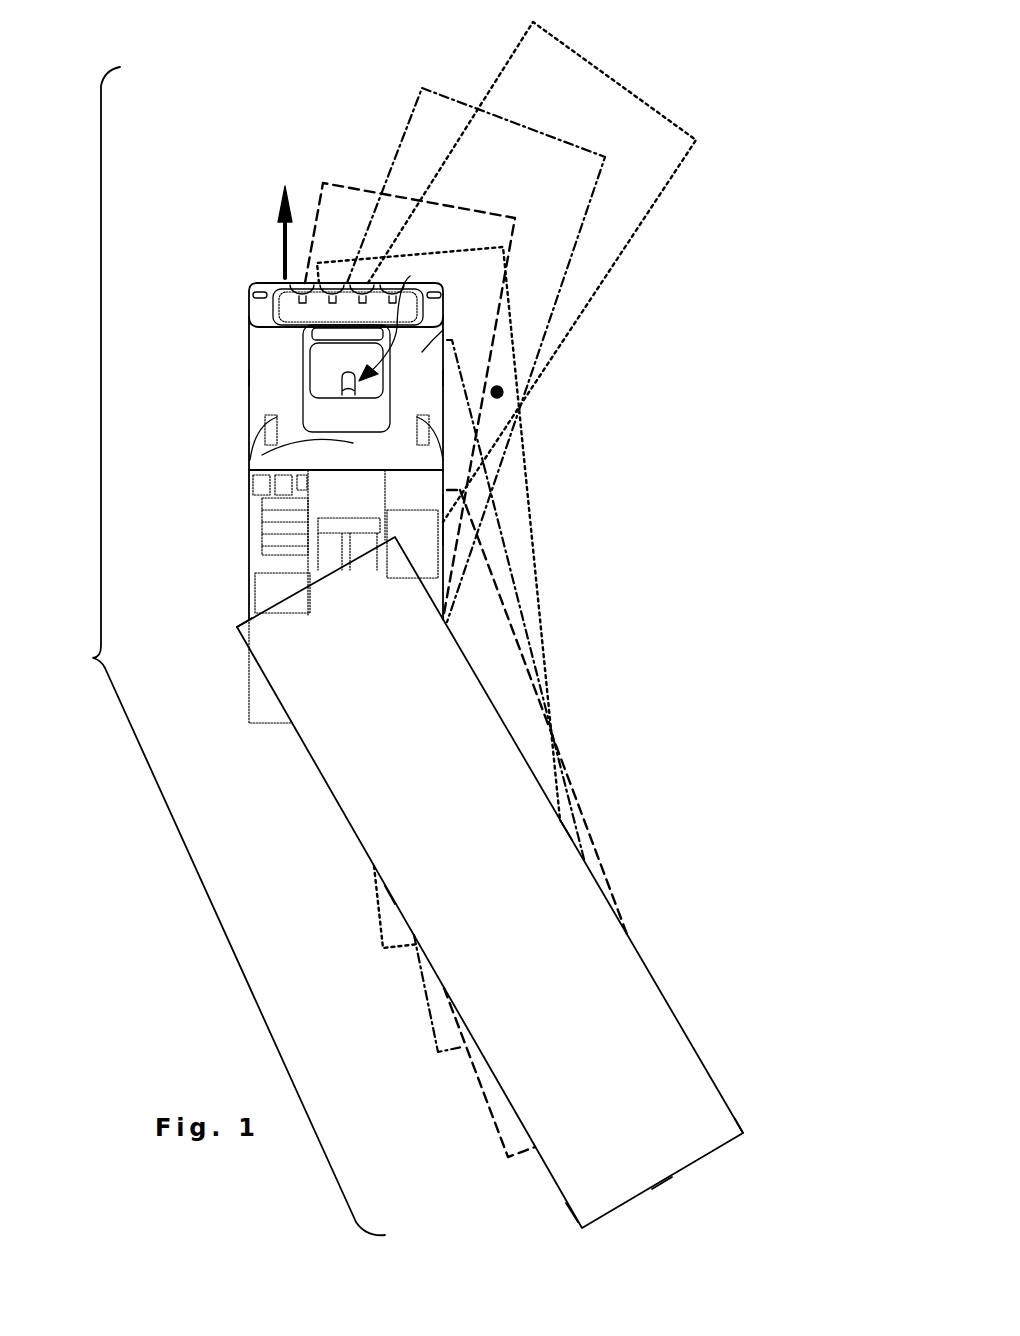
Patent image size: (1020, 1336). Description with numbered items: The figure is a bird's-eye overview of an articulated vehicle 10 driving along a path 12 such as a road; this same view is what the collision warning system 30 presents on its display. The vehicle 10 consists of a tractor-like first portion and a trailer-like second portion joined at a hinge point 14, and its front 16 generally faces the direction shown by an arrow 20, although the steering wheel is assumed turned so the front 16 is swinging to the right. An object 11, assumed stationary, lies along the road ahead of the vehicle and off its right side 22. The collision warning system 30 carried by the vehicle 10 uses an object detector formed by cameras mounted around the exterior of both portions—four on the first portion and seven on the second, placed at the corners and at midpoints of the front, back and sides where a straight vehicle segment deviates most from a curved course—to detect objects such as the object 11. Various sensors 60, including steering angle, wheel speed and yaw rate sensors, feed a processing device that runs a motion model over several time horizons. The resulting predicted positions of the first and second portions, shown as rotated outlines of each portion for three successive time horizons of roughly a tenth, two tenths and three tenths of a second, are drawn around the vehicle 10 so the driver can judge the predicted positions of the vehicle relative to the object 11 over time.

The vehicle 10 is at (93, 658).
The object 11 is at (505, 388).
The path 12 is at (224, 172).
The hinge point 14 is at (330, 592).
The front 16 is at (258, 283).
The arrow 20 is at (272, 232).
The right side 22 is at (444, 503).
The collision warning system 30 is at (410, 276).
The sensors 60 is at (443, 330).